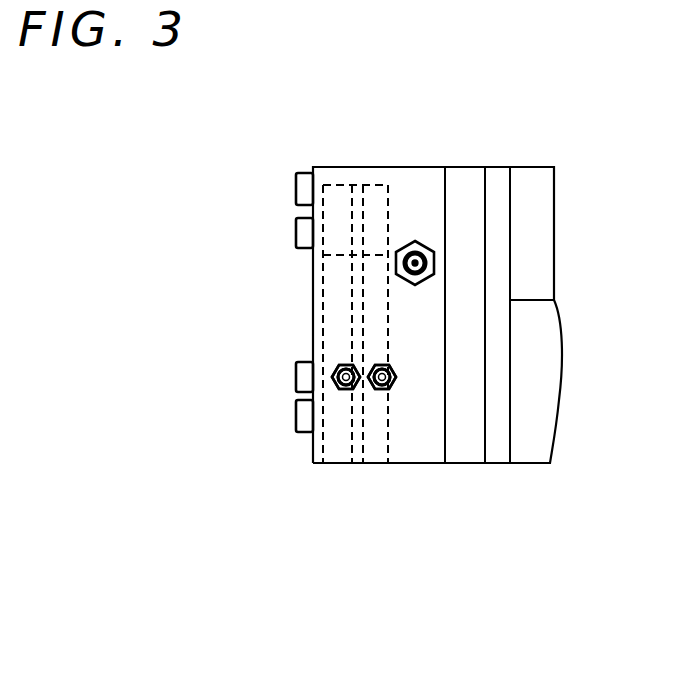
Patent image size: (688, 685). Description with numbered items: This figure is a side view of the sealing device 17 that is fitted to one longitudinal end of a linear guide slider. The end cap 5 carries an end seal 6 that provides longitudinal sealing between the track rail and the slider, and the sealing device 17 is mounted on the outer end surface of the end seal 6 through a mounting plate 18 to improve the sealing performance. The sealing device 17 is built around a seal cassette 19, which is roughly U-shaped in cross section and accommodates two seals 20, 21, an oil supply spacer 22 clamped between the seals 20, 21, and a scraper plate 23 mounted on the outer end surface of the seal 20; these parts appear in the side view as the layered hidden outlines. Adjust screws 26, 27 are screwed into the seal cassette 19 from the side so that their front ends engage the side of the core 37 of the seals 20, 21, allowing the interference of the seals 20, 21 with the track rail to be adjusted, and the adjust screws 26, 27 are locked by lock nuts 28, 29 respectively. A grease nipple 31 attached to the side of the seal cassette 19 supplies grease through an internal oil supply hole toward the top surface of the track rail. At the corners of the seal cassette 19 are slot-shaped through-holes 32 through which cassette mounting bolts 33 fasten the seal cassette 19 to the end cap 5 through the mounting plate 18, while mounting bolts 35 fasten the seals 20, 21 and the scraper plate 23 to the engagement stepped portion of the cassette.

The end cap 5 is at (540, 167).
The end seal 6 is at (496, 185).
The sealing device 17 is at (365, 162).
The mounting plate 18 is at (462, 450).
The seal cassette 19 is at (413, 463).
The seal 20 is at (378, 466).
The seal 21 is at (337, 466).
The oil supply spacer 22 is at (358, 466).
The scraper plate 23 is at (318, 466).
The adjust screw 26 is at (341, 388).
The adjust screw 27 is at (392, 367).
The lock nut 28 is at (337, 367).
The lock nut 29 is at (391, 388).
The grease nipple 31 is at (422, 241).
The through-hole 32 is at (387, 347).
The cassette mounting bolt 33 is at (296, 186).
The mounting bolt 35 is at (296, 230).
The core 37 is at (348, 352).